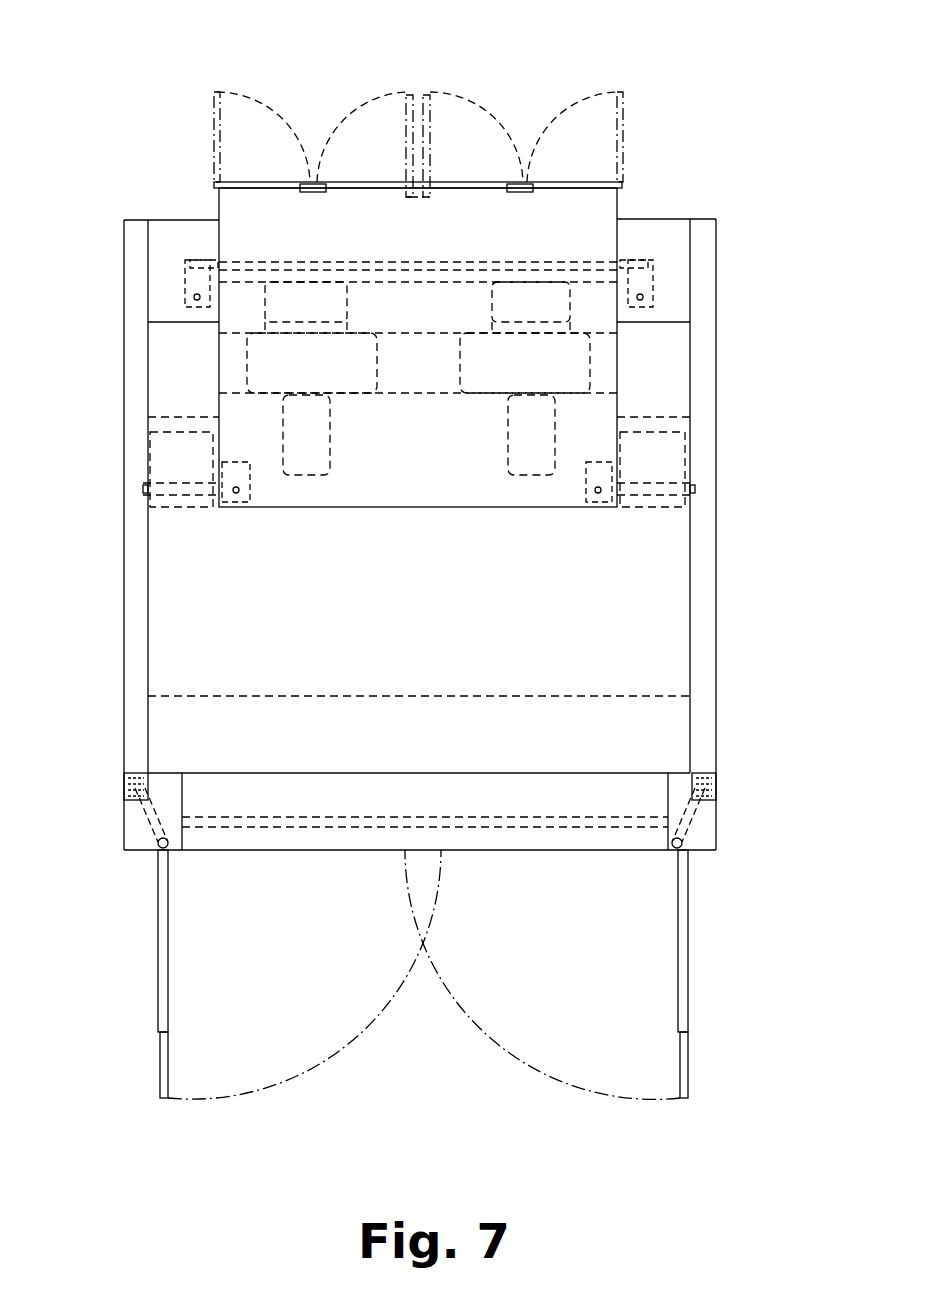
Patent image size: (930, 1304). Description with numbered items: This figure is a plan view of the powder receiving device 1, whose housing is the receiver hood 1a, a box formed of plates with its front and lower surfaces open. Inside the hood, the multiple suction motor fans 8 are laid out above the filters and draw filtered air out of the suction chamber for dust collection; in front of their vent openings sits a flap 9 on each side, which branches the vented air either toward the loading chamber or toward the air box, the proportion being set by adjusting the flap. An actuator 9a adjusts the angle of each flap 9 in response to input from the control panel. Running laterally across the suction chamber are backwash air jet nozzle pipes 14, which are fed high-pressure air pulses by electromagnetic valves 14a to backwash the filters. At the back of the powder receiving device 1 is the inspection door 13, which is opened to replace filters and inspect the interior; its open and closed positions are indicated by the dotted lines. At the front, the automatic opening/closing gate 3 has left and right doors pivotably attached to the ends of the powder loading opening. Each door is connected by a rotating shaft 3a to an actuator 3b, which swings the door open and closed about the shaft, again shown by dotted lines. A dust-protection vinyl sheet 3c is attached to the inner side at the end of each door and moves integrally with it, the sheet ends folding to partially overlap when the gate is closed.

The powder receiving device 1 is at (695, 70).
The receiver hood 1a is at (124, 637).
The automatic opening/closing gate 3 is at (158, 968).
The rotating shaft 3a is at (150, 855).
The actuator 3b is at (128, 787).
The dust-protection vinyl sheet 3c is at (160, 1075).
The suction motor fan 8 is at (378, 371).
The flap 9 is at (160, 458).
The actuator 9a is at (236, 505).
The inspection door 13 is at (257, 180).
The backwash air jet nozzle pipe 14 is at (387, 260).
The electromagnetic valve 14a is at (180, 290).